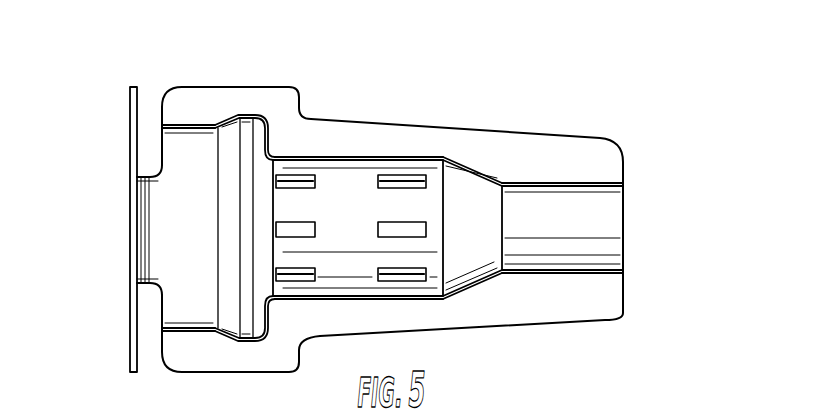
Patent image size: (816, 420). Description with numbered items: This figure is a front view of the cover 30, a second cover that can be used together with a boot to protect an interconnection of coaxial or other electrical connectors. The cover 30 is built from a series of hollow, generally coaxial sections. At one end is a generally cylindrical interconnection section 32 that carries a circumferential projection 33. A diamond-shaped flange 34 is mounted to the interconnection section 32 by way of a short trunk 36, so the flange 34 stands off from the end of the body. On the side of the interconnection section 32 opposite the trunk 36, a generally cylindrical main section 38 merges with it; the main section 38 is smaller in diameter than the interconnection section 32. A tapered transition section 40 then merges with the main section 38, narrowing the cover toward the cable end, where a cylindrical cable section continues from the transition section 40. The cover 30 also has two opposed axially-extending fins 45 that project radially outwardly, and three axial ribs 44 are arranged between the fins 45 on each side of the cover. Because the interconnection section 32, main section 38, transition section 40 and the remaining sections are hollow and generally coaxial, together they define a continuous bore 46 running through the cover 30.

The cover 30 is at (405, 199).
The interconnection section 32 is at (186, 128).
The circumferential projection 33 is at (247, 118).
The flange 34 is at (133, 124).
The trunk 36 is at (153, 278).
The main section 38 is at (332, 169).
The transition section 40 is at (467, 165).
The axial ribs 44 is at (397, 178).
The fins 45 is at (603, 157).
The bore 46 is at (612, 249).